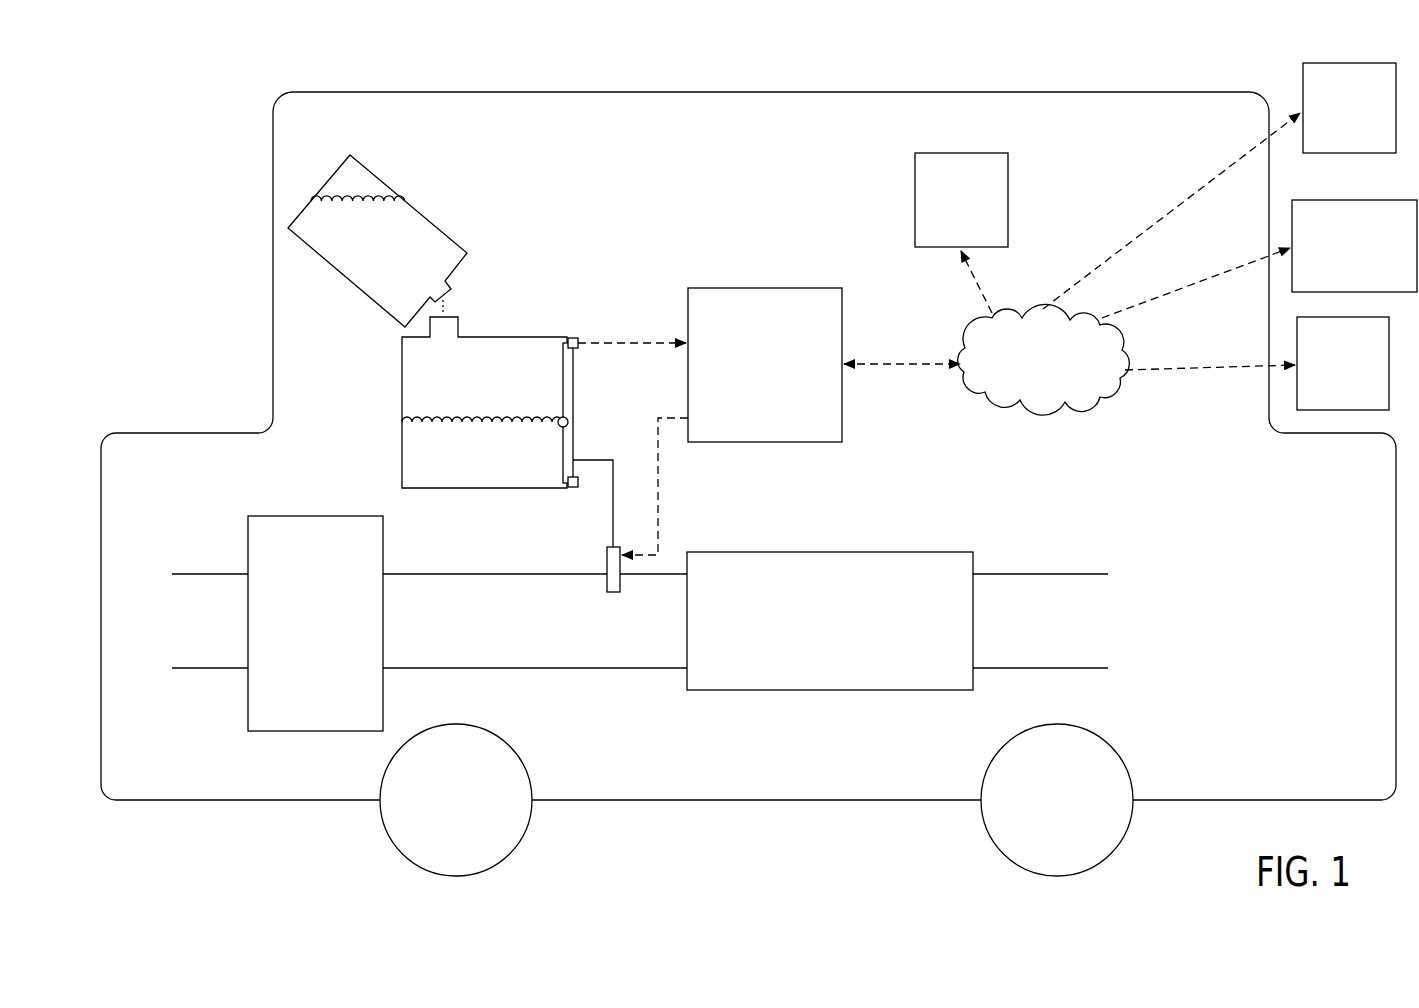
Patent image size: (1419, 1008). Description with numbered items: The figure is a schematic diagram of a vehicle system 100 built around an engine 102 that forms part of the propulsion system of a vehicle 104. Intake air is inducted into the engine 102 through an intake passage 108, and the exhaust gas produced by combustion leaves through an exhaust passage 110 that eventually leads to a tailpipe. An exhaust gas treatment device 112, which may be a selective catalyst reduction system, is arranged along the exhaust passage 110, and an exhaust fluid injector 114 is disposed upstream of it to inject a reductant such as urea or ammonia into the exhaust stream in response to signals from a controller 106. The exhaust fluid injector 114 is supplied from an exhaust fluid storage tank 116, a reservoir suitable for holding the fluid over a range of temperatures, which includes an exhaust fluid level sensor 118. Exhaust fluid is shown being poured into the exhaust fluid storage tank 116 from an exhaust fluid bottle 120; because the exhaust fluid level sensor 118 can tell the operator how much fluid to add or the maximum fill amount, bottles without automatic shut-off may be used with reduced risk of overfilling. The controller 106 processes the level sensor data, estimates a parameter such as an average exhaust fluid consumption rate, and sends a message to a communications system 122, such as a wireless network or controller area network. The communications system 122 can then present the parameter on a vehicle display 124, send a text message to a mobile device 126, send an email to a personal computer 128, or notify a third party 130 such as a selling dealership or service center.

The vehicle system 100 is at (176, 141).
The engine 102 is at (300, 646).
The vehicle 104 is at (648, 92).
The controller 106 is at (750, 390).
The intake passage 108 is at (214, 633).
The exhaust passage 110 is at (544, 633).
The exhaust gas treatment device 112 is at (815, 656).
The exhaust fluid injector 114 is at (606, 566).
The exhaust fluid storage tank 116 is at (490, 337).
The exhaust fluid level sensor 118 is at (570, 420).
The exhaust fluid bottle 120 is at (357, 281).
The communications system 122 is at (1027, 368).
The vehicle display 124 is at (947, 236).
The mobile device 126 is at (1333, 145).
The personal computer 128 is at (1342, 283).
The third party 130 is at (1328, 401).